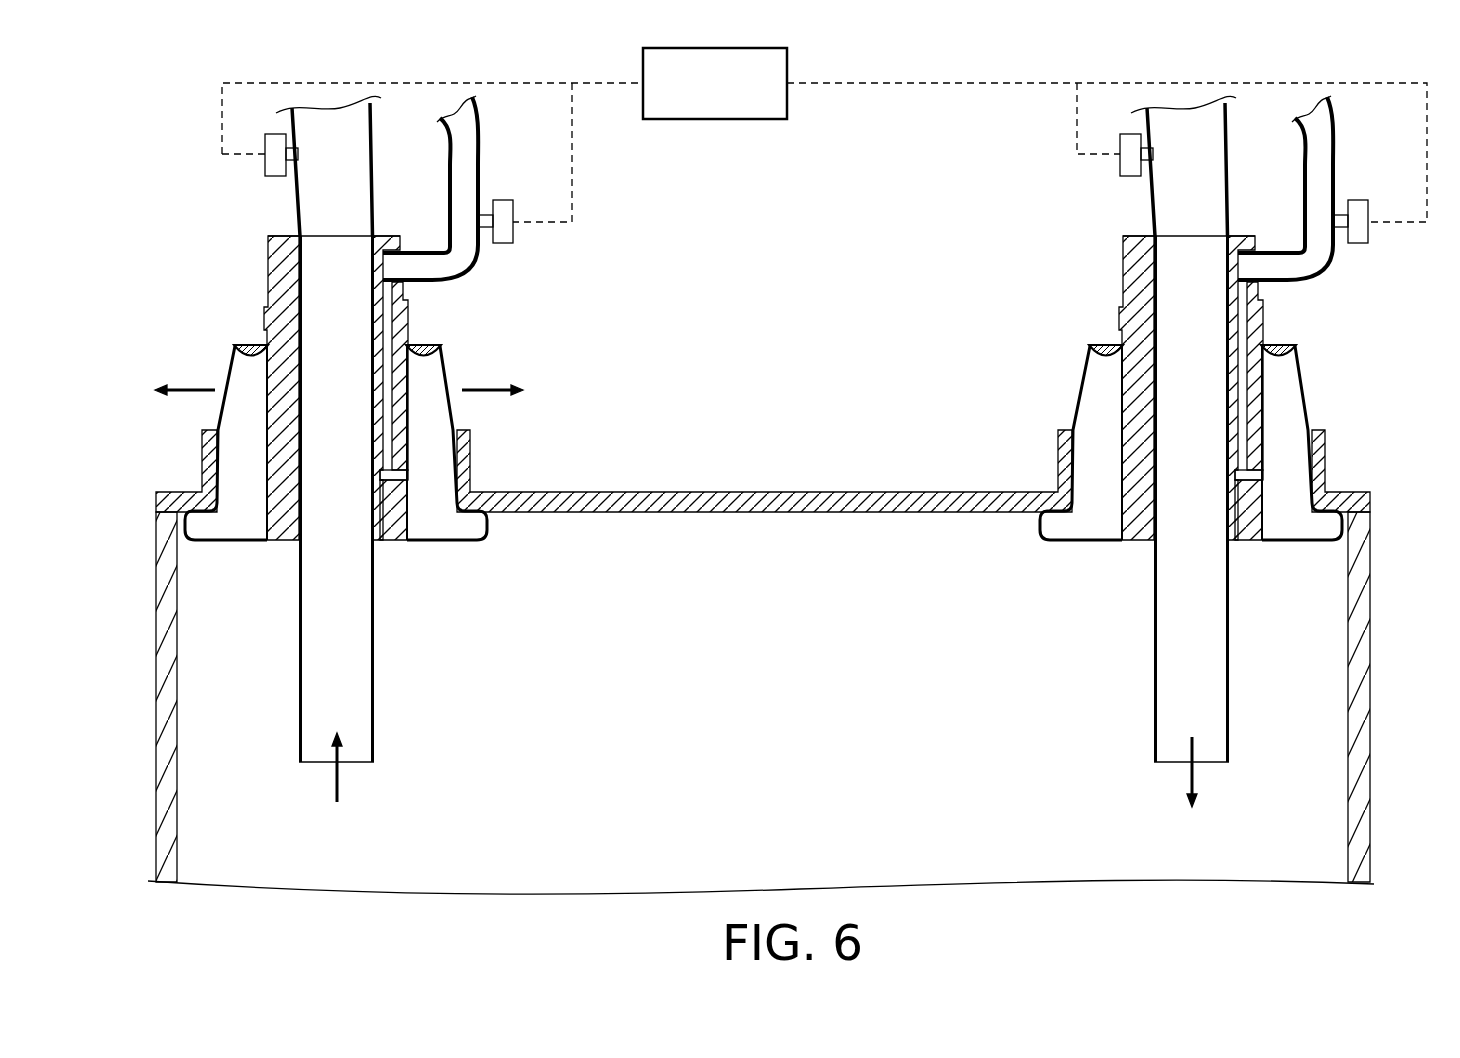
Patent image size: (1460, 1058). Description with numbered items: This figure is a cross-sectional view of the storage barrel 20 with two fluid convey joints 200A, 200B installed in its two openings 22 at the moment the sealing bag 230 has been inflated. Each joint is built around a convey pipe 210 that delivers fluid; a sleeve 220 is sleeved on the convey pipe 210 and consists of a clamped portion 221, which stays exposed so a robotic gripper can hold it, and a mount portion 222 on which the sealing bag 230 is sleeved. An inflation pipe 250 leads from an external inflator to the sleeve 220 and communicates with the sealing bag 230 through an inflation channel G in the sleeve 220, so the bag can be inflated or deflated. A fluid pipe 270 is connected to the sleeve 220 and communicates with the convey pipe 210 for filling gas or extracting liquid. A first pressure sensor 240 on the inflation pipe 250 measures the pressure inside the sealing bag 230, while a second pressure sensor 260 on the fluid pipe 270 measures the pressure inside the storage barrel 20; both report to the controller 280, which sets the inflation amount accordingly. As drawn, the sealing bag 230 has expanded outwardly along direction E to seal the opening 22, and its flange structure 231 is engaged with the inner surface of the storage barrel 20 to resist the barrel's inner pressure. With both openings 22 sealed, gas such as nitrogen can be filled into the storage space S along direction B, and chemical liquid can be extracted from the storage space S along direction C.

The storage barrel 20 is at (167, 693).
The opening 22 is at (214, 426).
The fluid convey joint 200A is at (351, 429).
The fluid convey joint 200B is at (1315, 367).
The convey pipe 210 is at (373, 692).
The sleeve 220 is at (260, 388).
The clamped portion 221 is at (280, 292).
The mount portion 222 is at (277, 320).
The sealing bag 230 is at (377, 446).
The flange structure 231 is at (487, 523).
The first pressure sensor 240 is at (505, 235).
The inflation pipe 250 is at (475, 250).
The second pressure sensor 260 is at (277, 168).
The fluid pipe 270 is at (372, 158).
The controller 280 is at (643, 62).
The direction E is at (339, 380).
The inflation channel G is at (392, 390).
The storage space S is at (238, 841).
The direction C is at (344, 767).
The direction B is at (1199, 772).